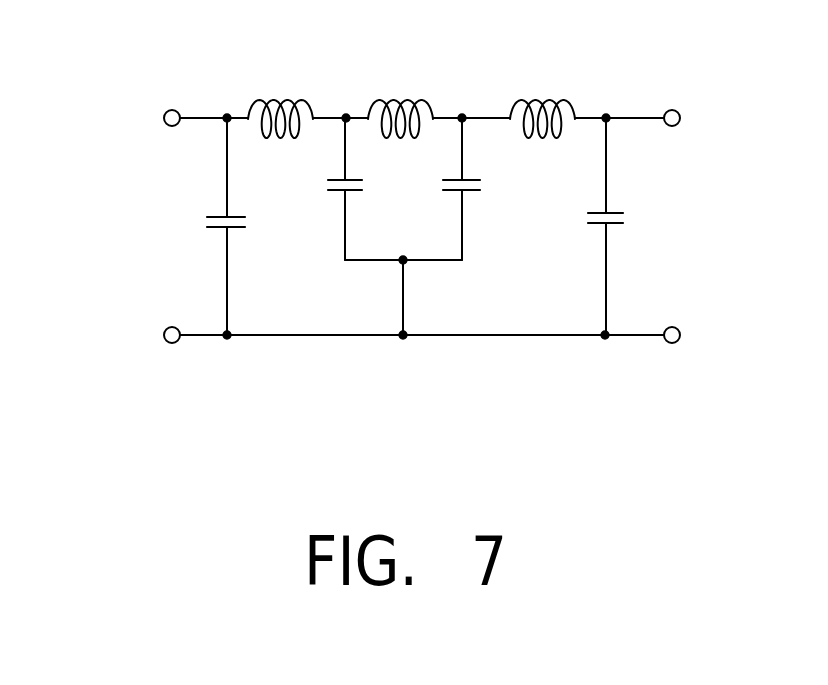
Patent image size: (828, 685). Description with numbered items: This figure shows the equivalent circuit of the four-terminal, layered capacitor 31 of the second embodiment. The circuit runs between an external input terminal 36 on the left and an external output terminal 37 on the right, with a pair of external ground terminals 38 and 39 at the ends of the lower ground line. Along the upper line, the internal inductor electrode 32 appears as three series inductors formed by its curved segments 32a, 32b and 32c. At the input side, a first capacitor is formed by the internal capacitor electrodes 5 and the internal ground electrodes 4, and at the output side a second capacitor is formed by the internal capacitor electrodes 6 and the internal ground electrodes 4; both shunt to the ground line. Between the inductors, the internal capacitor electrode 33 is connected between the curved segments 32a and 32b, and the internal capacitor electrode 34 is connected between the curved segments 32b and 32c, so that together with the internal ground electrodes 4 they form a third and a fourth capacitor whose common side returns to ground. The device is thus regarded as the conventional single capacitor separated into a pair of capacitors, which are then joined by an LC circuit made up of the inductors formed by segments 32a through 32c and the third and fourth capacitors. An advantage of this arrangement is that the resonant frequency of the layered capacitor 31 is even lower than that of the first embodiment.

The four-terminal, layered capacitor 31 is at (90, 177).
The internal inductor electrode 32 is at (608, 54).
The curved segment 32a is at (288, 101).
The curved segment 32b is at (408, 101).
The curved segment 32c is at (550, 101).
The internal capacitor electrode 33 is at (353, 179).
The internal capacitor electrode 34 is at (476, 179).
The external input terminal 36 is at (178, 111).
The external output terminal 37 is at (680, 114).
The external ground terminal 38 is at (176, 343).
The external ground terminal 39 is at (680, 341).
The internal ground electrode 4 is at (236, 229).
The internal capacitor electrode 5 is at (232, 216).
The internal capacitor electrode 6 is at (612, 212).